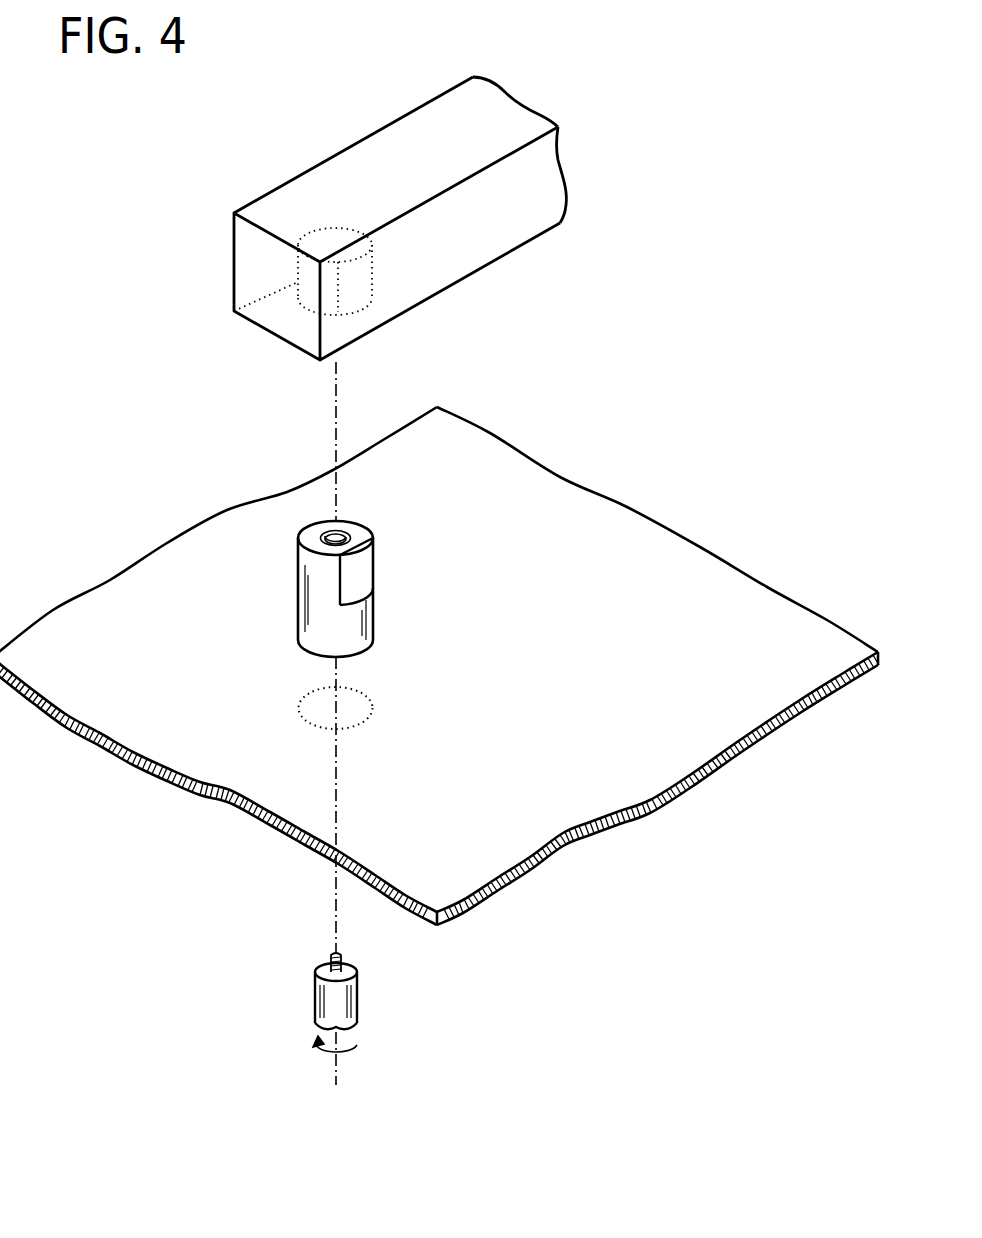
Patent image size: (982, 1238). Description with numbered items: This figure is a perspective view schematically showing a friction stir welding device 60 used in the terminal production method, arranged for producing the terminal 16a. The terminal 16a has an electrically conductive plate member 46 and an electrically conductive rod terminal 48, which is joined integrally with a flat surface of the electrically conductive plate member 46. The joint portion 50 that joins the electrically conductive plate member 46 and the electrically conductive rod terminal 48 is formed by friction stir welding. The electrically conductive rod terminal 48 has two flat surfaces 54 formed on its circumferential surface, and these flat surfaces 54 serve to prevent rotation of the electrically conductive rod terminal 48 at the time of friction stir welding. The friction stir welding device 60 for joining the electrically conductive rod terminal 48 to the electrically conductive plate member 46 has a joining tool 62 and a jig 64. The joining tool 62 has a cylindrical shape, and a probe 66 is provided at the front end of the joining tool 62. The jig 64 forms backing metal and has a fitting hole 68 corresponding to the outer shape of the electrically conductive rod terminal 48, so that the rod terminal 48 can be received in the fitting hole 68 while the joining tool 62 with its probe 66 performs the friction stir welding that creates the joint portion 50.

The terminal 16a is at (167, 537).
The electrically conductive plate member 46 is at (145, 608).
The electrically conductive rod terminal 48 is at (285, 607).
The joint portion 50 is at (353, 703).
The flat surface 54 is at (358, 568).
The friction stir welding device 60 is at (127, 321).
The joining tool 62 is at (298, 1025).
The jig 64 is at (247, 193).
The probe 66 is at (334, 956).
The fitting hole 68 is at (372, 268).